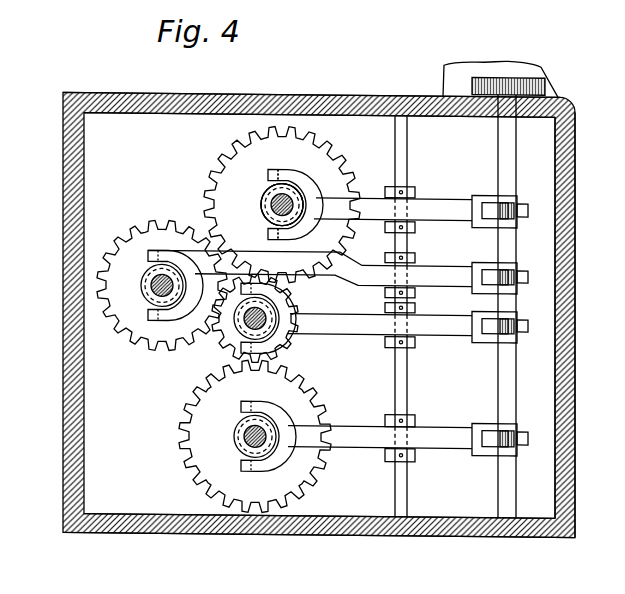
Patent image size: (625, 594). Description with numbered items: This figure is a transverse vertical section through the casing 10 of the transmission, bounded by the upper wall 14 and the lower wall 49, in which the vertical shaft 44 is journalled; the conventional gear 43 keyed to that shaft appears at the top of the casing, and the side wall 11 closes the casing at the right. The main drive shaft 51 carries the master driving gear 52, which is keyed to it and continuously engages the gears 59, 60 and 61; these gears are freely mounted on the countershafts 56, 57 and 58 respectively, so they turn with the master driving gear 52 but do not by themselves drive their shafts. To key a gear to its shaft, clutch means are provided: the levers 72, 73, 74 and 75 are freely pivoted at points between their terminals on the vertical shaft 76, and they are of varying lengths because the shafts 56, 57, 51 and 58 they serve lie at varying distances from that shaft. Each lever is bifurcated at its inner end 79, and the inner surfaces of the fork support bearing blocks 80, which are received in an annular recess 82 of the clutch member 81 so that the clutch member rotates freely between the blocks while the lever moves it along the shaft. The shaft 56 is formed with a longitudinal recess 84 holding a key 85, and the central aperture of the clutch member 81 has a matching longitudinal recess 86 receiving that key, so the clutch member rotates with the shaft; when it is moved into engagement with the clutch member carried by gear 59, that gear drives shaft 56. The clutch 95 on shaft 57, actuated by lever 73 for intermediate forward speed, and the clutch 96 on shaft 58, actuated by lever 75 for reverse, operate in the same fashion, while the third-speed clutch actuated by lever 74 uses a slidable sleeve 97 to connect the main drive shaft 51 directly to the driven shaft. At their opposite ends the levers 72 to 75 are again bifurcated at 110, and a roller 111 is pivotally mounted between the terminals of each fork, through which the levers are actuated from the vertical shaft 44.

The casing 10 is at (62, 354).
The upper wall 14 is at (220, 91).
The side wall 11 is at (576, 250).
The lower wall 49 is at (358, 537).
The conventional gear 43 is at (545, 82).
The vertical shaft 44 is at (512, 158).
The vertical shaft 76 is at (408, 392).
The lever 72 is at (393, 209).
The lever 73 is at (338, 272).
The lever 74 is at (407, 326).
The lever 75 is at (380, 437).
The bifurcated portion 110 is at (521, 196).
The roller 111 is at (518, 211).
The gear 59 is at (262, 164).
The gear 60 is at (135, 278).
The gear 61 is at (222, 437).
The main drive shaft 51 is at (267, 321).
The countershaft 56 is at (306, 193).
The bifurcated inner end 79 is at (277, 170).
The longitudinal recess 86 is at (288, 184).
The key 85 is at (291, 194).
The longitudinal recess 84 is at (270, 203).
The bearing blocks 80 is at (271, 186).
The clutch member 81 is at (268, 209).
The annular recess 82 is at (279, 209).
The countershaft 57 is at (158, 300).
The clutch 95 is at (152, 292).
The slidable sleeve 97 is at (227, 348).
The master driving gear 52 is at (223, 340).
The countershaft 58 is at (270, 424).
The clutch 96 is at (242, 447).